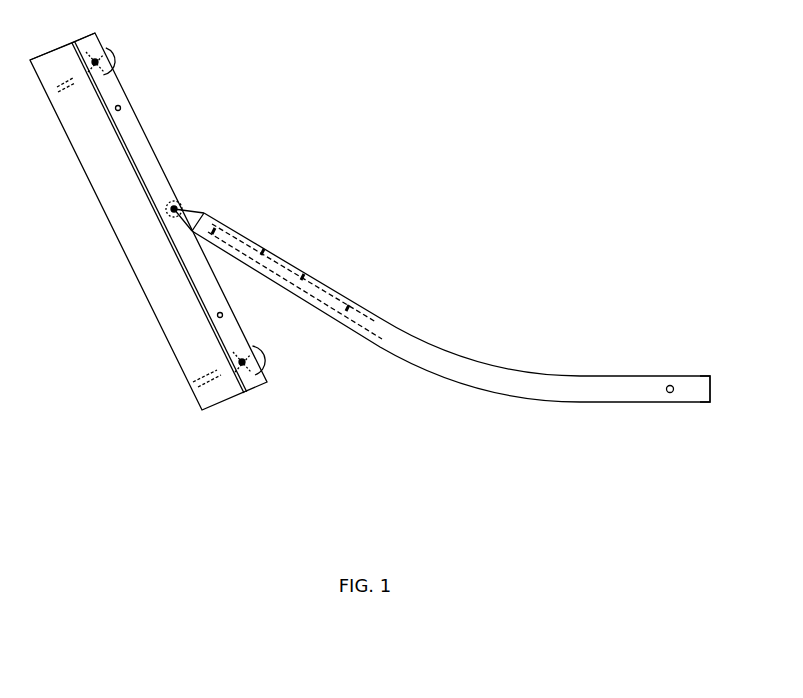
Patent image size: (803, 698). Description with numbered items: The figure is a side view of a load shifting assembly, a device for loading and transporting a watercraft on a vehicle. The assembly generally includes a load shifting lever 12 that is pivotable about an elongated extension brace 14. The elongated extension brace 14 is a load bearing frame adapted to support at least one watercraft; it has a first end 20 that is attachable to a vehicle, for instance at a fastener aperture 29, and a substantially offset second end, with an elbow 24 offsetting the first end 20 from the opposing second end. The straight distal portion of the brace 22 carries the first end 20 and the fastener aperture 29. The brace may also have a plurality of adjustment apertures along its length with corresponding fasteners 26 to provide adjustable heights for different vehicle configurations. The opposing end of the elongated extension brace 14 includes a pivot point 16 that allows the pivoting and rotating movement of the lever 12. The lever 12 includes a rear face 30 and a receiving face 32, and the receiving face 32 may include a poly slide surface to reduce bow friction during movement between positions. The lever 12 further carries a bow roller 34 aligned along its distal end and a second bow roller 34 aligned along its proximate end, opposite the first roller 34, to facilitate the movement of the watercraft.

The load shifting lever 12 is at (72, 44).
The elongated extension brace 14 is at (451, 297).
The pivot point 16 is at (180, 205).
The first end 20 is at (701, 375).
The straight end portion of arm 22 is at (601, 403).
The elbow 24 is at (443, 364).
The fasteners 26 is at (348, 308).
The fastener aperture 29 is at (672, 392).
The rear face 30 is at (151, 148).
The receiving face 32 is at (125, 252).
The bow roller 34 is at (108, 50).